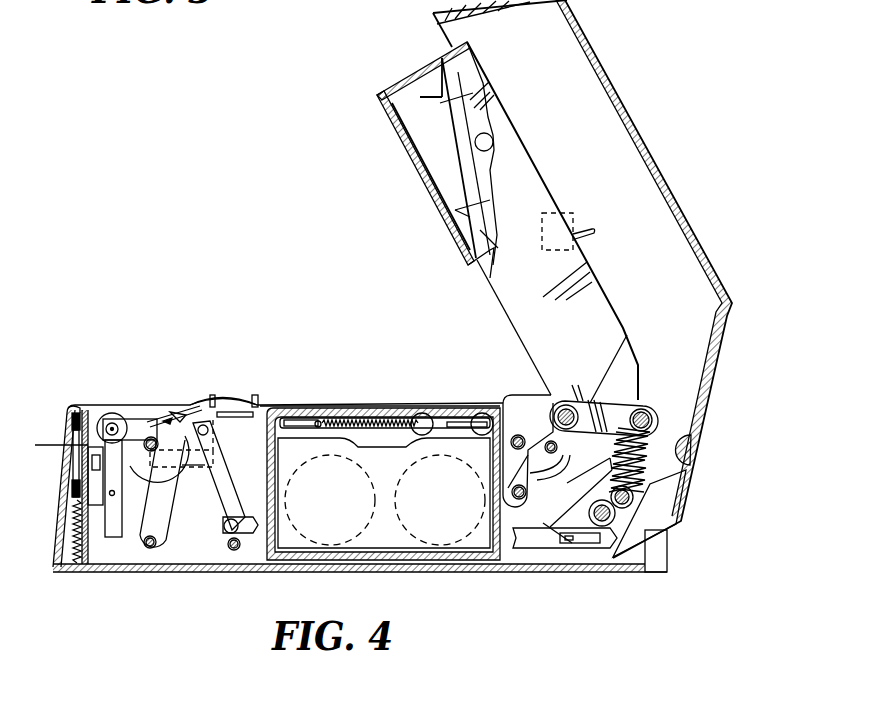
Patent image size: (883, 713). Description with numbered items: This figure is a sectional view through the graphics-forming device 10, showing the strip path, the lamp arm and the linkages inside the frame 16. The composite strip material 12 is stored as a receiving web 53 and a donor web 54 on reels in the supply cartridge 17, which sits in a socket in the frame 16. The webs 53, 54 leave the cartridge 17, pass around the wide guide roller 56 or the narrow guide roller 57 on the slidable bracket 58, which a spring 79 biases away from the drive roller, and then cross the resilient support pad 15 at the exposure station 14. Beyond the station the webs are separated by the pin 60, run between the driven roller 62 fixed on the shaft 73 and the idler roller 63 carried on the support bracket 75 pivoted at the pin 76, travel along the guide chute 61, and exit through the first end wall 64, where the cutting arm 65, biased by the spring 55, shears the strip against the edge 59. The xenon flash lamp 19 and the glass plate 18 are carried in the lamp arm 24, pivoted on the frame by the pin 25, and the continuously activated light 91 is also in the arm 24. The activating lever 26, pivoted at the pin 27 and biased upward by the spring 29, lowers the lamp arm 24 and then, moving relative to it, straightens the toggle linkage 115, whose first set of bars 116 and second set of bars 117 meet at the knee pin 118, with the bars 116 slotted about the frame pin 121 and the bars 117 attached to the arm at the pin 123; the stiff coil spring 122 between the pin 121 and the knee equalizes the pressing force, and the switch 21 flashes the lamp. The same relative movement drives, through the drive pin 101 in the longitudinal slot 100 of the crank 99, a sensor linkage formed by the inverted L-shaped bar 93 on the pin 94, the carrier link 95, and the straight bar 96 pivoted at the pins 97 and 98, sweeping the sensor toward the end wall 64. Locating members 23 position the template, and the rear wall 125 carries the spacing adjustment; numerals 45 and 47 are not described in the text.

The device for forming graphics 10 is at (103, 290).
The composite strip material 12 is at (297, 398).
The exposure station 14 is at (233, 393).
The resilient support pad 15 is at (242, 410).
The frame 16 is at (62, 572).
The supply cartridge 17 is at (380, 536).
The glass plate 18 is at (410, 158).
The xenon flash lamp 19 is at (435, 122).
The switch 21 is at (592, 233).
The locating members 23 is at (212, 394).
The lamp arm 24 is at (383, 92).
The pin 25 is at (517, 434).
The activating lever 26 is at (595, 60).
The pin 27 is at (616, 513).
The spring 29 is at (574, 523).
The screw 45 is at (521, 500).
The stop member 47 is at (83, 405).
The receiving web 53 is at (163, 418).
The donor web 54 is at (384, 493).
The spring 55 is at (72, 530).
The guide roller 56 is at (482, 412).
The guide roller 57 is at (422, 412).
The bracket 58 is at (315, 418).
The edge 59 is at (72, 475).
The pin 60 is at (173, 408).
The guide chute 61 is at (71, 475).
The driven roller 62 is at (145, 457).
The idler roller 63 is at (112, 412).
The first end wall 64 is at (65, 500).
The cutting arm 65 is at (70, 411).
The shaft 73 is at (151, 436).
The support bracket 75 is at (118, 484).
The pin 76 is at (112, 497).
The spring 79 is at (370, 418).
The light 91 is at (495, 135).
The inverted L-shaped bar 93 is at (165, 506).
The pin 94 is at (158, 545).
The carrier link 95 is at (181, 463).
The straight bar 96 is at (224, 473).
The pin 97 is at (210, 431).
The pin 98 is at (234, 552).
The crank 99 is at (250, 536).
The longitudinal slot 100 is at (577, 548).
The drive pin 101 is at (566, 548).
The toggle linkage 115 is at (647, 397).
The first set of bars 116 is at (688, 463).
The second set of bars 117 is at (610, 403).
The pin 118 is at (652, 410).
The pin 121 is at (634, 496).
The stiff coil spring 122 is at (678, 439).
The pin 123 is at (567, 405).
The rear wall 125 is at (668, 552).